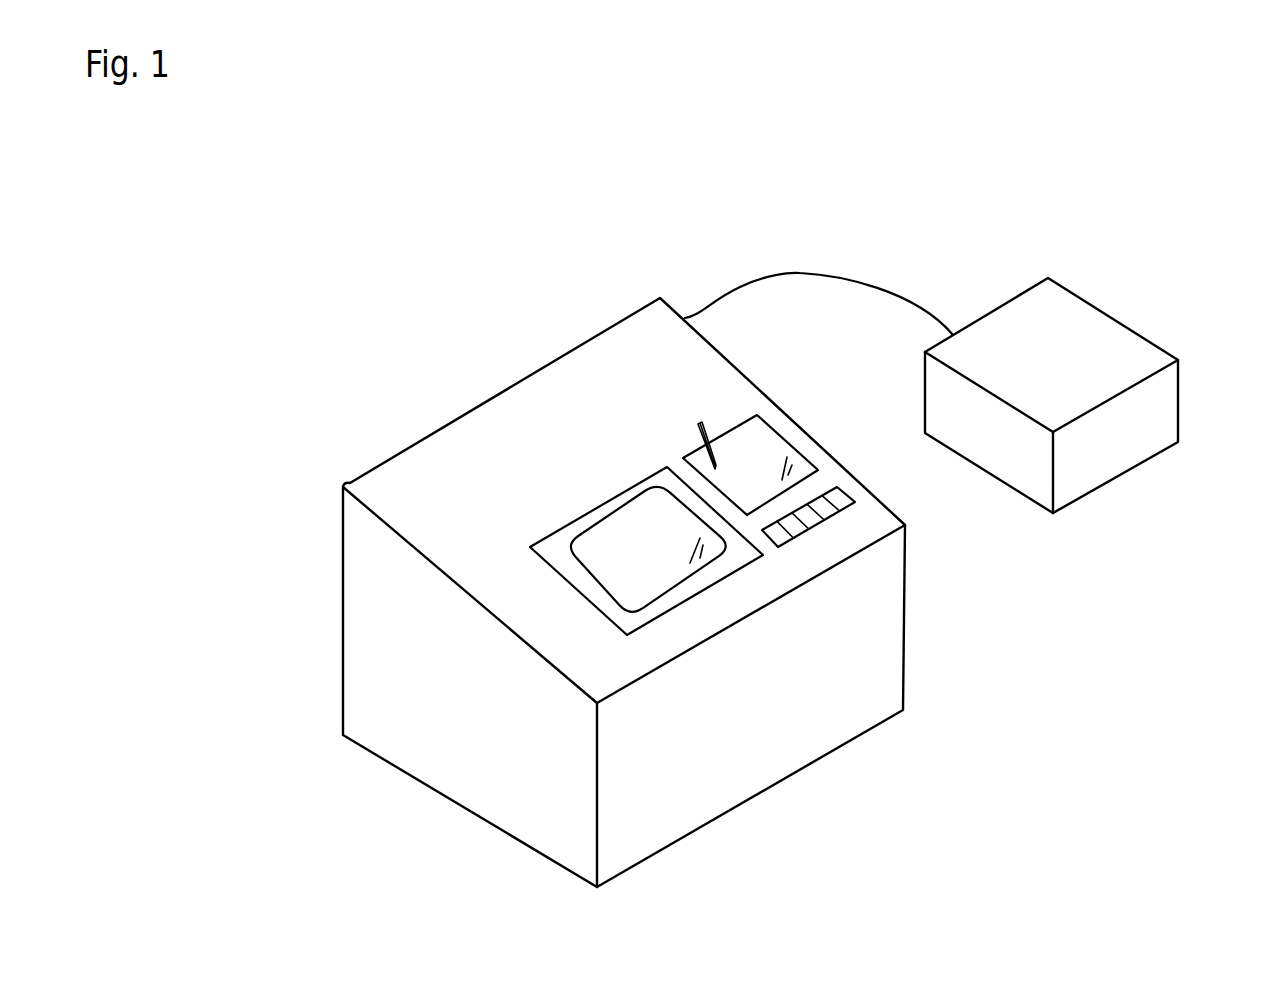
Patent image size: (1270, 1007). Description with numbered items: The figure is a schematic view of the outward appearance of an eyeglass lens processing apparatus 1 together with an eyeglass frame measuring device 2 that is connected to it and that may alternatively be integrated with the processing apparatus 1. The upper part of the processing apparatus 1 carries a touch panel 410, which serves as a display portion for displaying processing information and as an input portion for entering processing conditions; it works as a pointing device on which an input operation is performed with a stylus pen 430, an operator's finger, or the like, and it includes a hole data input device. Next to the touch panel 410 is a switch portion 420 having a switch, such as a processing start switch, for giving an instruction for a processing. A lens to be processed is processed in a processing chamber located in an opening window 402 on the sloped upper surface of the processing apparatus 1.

The eyeglass lens processing apparatus 1 is at (430, 338).
The eyeglass frame measuring device 2 is at (1158, 517).
The opening window 402 is at (578, 583).
The touch panel 410 is at (781, 462).
The switch portion 420 is at (832, 512).
The stylus pen 430 is at (695, 436).